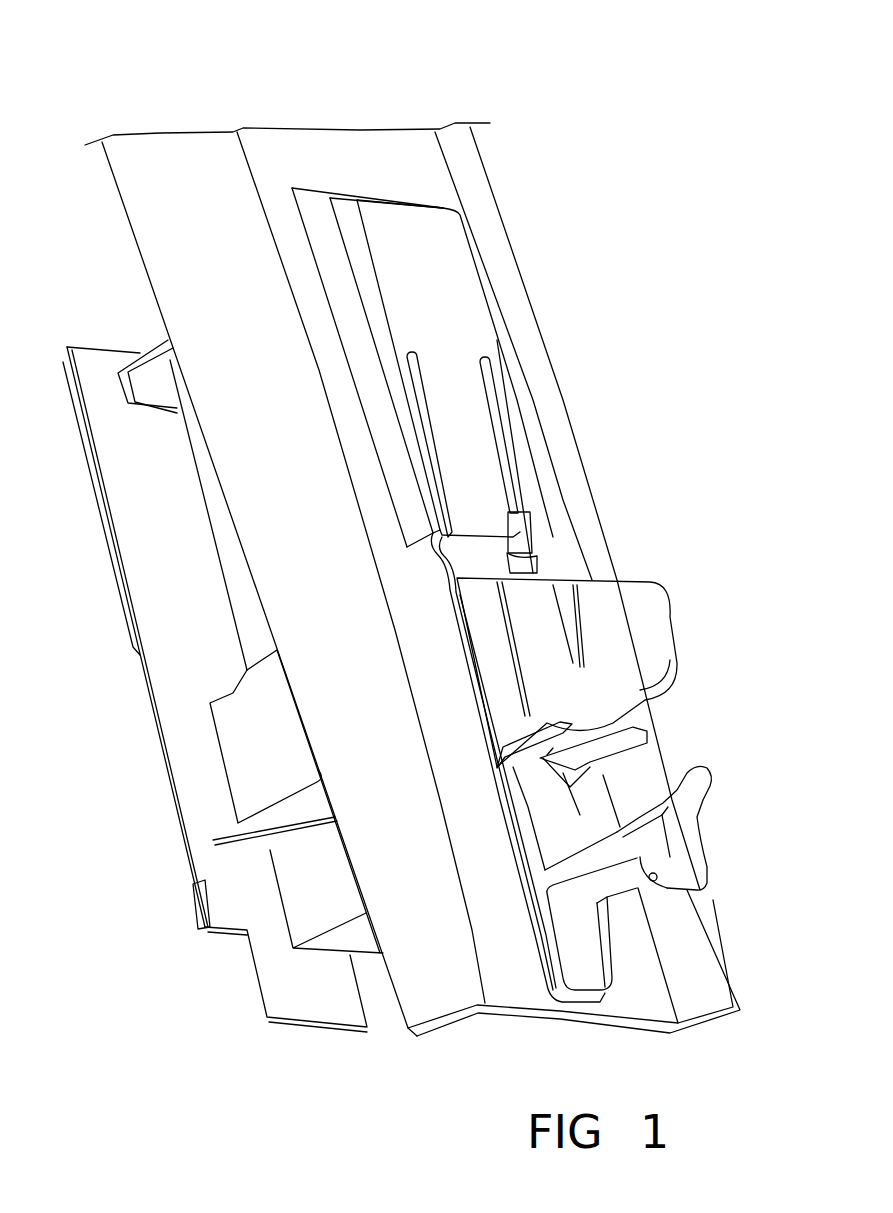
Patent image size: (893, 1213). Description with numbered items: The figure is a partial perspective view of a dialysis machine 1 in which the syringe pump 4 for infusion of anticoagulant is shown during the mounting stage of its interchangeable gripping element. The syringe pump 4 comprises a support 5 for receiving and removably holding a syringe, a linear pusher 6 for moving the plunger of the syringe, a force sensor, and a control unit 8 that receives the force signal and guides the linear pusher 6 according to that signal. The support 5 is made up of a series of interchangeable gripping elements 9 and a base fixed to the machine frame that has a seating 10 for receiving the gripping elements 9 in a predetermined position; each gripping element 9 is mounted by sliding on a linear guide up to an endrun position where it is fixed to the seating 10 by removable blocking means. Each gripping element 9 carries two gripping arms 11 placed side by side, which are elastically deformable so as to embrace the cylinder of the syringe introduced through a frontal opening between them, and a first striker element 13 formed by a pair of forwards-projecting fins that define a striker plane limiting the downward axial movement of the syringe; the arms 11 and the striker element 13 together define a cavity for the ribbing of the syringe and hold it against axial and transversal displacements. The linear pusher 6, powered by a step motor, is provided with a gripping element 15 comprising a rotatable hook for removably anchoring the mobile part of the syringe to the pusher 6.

The storage compartment assembly 1 is at (612, 128).
The syringe pump 4 is at (618, 485).
The support 5 is at (520, 384).
The linear pusher 6 is at (575, 878).
The control unit 8 is at (150, 795).
The gripping element 9 is at (682, 563).
The seating 10 is at (487, 483).
The gripping arms 11 is at (670, 612).
The first striker element 13 is at (567, 733).
The gripping element 15 is at (707, 835).